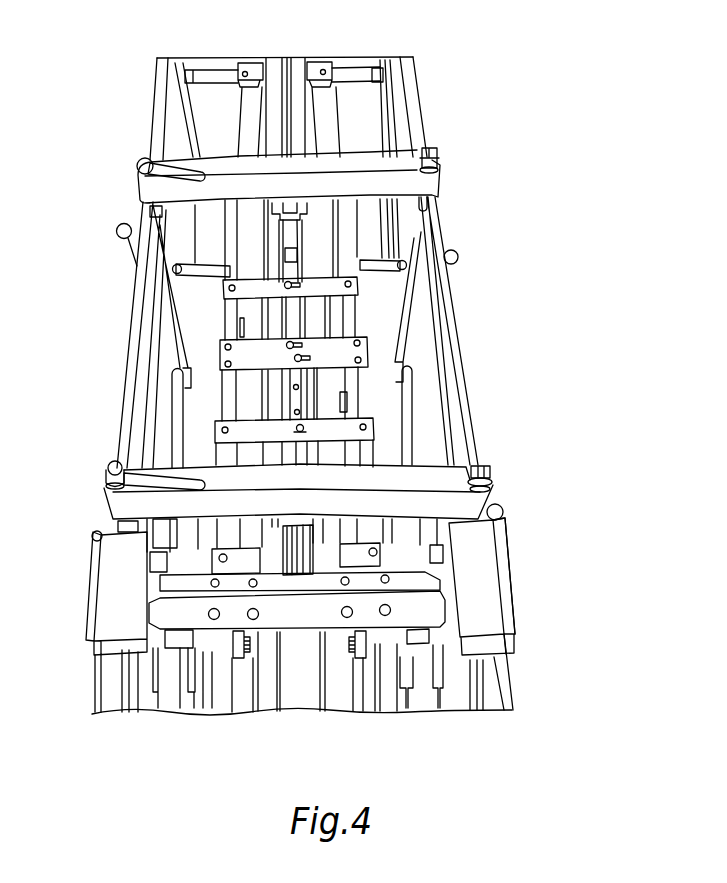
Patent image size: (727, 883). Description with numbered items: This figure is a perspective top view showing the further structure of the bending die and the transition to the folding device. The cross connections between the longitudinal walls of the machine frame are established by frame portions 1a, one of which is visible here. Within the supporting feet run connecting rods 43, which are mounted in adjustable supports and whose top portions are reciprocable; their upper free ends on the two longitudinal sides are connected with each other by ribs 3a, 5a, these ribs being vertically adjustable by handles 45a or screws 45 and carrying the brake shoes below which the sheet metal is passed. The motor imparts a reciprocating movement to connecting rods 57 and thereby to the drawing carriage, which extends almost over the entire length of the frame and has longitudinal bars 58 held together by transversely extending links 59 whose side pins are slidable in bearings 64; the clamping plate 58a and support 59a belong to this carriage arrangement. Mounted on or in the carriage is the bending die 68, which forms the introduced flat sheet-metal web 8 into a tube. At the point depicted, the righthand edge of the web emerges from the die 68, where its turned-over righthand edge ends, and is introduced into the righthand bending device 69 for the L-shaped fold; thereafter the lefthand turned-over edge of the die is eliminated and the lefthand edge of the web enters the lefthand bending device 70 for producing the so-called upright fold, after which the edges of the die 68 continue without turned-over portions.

The frame portion 1a is at (384, 303).
The rib 3a is at (420, 478).
The rib 5a is at (404, 183).
The sheet-metal web 8 is at (313, 692).
The connecting rod 43 is at (124, 527).
The screw 45 is at (493, 473).
The handle 45a is at (107, 470).
The connecting rod 57 is at (177, 677).
The longitudinal bar 58 is at (323, 63).
The clamping plate 58a is at (350, 352).
The link 59 is at (421, 614).
The holding bar support 59a is at (415, 632).
The bearing 64 is at (496, 548).
The bending die 68 is at (268, 692).
The righthand bending device 69 is at (300, 400).
The lefthand bending device 70 is at (293, 307).